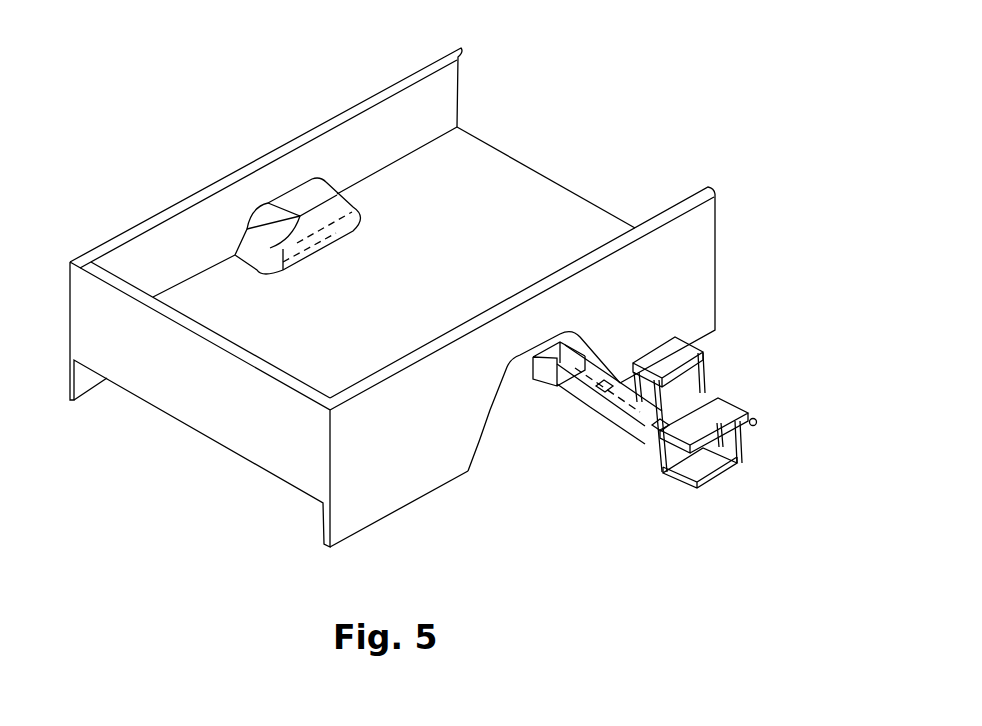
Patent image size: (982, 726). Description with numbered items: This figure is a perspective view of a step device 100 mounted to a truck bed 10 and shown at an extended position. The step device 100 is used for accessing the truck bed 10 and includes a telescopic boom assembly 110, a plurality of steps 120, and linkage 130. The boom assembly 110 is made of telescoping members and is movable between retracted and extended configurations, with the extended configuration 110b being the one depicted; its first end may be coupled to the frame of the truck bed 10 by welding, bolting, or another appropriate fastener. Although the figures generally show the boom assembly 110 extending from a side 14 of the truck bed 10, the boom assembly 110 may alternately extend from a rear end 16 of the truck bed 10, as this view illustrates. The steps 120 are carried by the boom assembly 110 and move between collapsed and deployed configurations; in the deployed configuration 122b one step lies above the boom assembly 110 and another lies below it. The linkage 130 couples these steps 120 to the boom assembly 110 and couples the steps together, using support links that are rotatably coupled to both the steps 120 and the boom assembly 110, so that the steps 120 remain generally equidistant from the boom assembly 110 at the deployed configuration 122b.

The truck bed 10 is at (326, 106).
The side 14 is at (717, 256).
The rear end 16 is at (560, 184).
The step device 100 is at (661, 496).
The telescopic boom assembly 110 is at (601, 420).
The extended configuration 110b is at (613, 438).
The steps 120 is at (710, 467).
The deployed configuration 122b is at (735, 475).
The linkage 130 is at (652, 398).